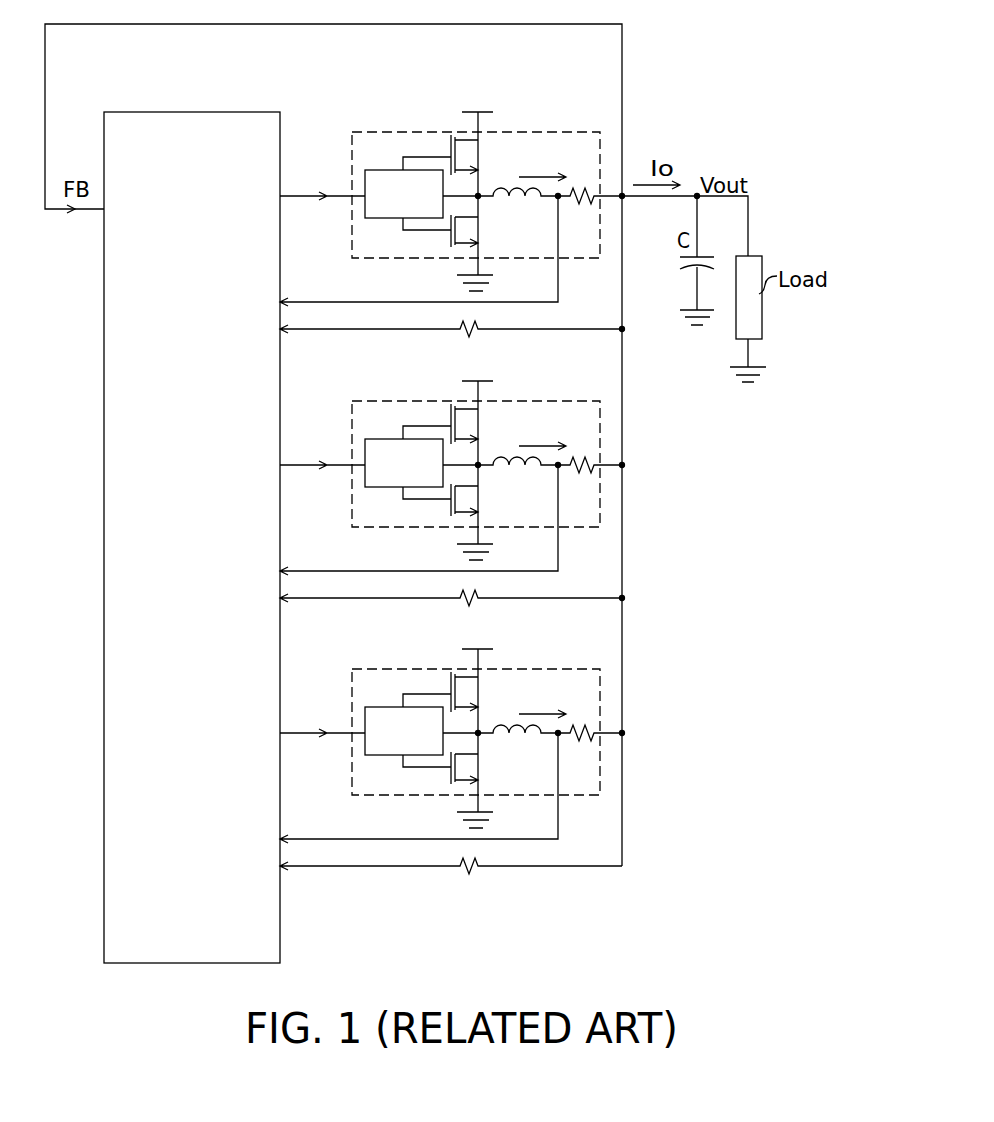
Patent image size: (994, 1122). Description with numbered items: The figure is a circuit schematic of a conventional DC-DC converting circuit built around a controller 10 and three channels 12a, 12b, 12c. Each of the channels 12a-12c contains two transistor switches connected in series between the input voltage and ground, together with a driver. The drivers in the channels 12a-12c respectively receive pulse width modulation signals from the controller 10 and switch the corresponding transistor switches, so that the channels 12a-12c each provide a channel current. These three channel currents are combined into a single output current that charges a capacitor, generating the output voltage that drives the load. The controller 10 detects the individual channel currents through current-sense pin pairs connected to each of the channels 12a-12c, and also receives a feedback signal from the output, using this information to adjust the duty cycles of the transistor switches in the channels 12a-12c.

The controller 10 is at (170, 120).
The channel 12a is at (532, 135).
The channel 12b is at (452, 480).
The channel 12c is at (452, 748).